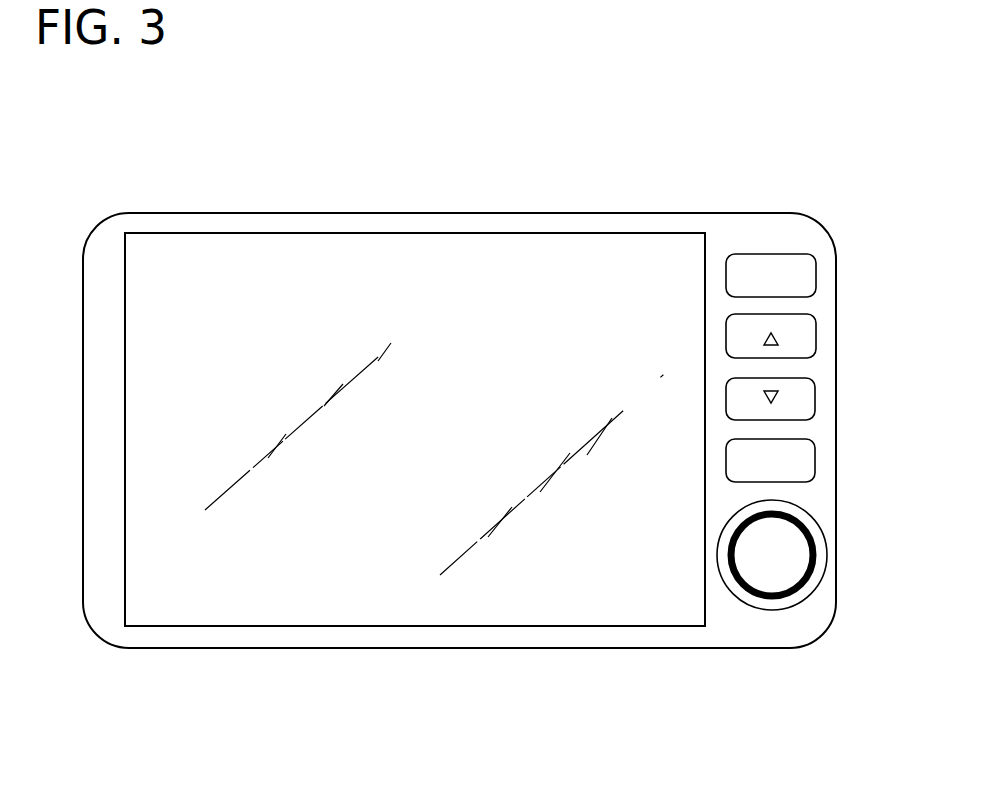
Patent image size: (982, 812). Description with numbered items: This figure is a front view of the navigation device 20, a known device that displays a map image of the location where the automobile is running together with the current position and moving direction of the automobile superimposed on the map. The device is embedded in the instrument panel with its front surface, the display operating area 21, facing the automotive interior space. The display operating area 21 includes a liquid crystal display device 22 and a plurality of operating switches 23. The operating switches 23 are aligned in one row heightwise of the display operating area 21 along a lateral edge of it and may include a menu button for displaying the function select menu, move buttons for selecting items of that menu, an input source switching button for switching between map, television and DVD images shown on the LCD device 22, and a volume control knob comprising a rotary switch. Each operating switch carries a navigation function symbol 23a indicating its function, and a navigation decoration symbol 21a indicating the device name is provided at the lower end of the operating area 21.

The navigation device 20 is at (413, 212).
The display operating area 21 is at (755, 228).
The navigation decoration symbol 21a is at (475, 643).
The liquid crystal display device 22 is at (230, 257).
The operating switches 23 is at (816, 277).
The navigation function symbol 23a is at (743, 555).